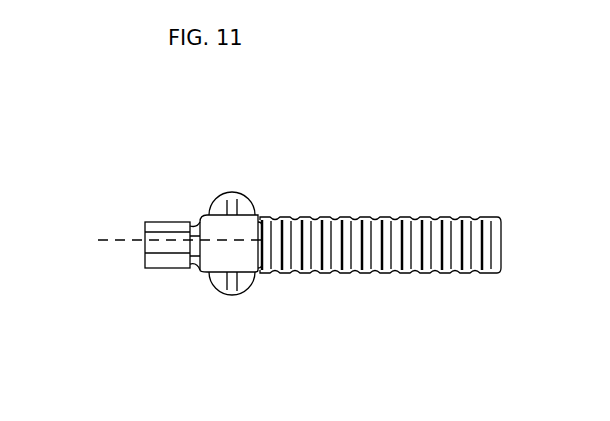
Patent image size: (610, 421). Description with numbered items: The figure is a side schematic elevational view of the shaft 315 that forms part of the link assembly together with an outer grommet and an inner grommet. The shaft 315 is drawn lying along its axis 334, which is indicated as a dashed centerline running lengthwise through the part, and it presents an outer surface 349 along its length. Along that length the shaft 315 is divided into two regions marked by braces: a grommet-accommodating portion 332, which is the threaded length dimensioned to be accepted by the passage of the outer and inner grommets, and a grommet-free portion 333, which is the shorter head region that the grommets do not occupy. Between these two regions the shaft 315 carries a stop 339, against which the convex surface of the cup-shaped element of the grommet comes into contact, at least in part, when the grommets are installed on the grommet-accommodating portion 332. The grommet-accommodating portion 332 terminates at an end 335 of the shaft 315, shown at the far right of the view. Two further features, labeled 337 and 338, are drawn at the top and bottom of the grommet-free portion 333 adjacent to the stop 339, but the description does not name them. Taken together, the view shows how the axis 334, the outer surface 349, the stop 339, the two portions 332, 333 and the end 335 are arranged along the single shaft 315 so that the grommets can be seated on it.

The outer surface 349 is at (170, 223).
The axis 334 is at (110, 235).
The upper spherical protrusion 337 is at (253, 197).
The lower spherical protrusion 338 is at (225, 266).
The grommet-free portion 333 is at (147, 293).
The stop 339 is at (256, 281).
The grommet-accommodating portion 332 is at (490, 200).
The shaft 315 is at (335, 237).
The end 335 is at (498, 242).